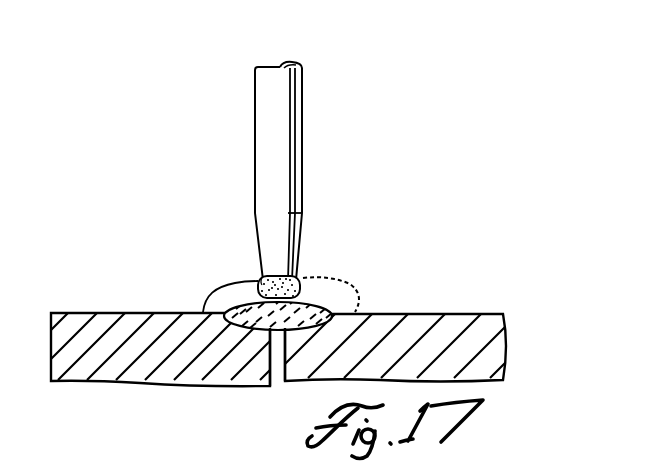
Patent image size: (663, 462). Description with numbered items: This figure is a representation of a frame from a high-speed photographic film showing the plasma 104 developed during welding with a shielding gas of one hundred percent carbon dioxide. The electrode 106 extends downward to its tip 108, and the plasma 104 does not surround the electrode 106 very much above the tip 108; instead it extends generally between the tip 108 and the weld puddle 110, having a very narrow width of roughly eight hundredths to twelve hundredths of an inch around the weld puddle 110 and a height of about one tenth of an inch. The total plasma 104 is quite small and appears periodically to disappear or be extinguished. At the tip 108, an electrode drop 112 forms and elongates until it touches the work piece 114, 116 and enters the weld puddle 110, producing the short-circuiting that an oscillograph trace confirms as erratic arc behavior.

The plasma 104 is at (212, 285).
The electrode 106 is at (282, 102).
The tip 108 is at (298, 277).
The weld puddle 110 is at (320, 312).
The electrode drop 112 is at (262, 277).
The work piece 114 is at (183, 372).
The work piece 116 is at (488, 343).